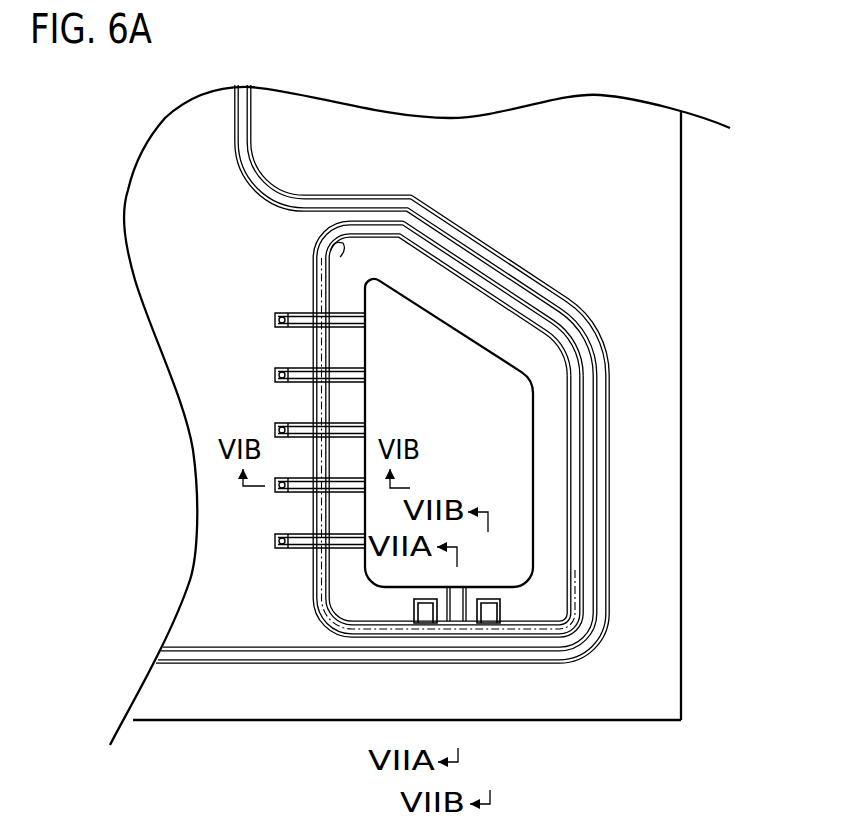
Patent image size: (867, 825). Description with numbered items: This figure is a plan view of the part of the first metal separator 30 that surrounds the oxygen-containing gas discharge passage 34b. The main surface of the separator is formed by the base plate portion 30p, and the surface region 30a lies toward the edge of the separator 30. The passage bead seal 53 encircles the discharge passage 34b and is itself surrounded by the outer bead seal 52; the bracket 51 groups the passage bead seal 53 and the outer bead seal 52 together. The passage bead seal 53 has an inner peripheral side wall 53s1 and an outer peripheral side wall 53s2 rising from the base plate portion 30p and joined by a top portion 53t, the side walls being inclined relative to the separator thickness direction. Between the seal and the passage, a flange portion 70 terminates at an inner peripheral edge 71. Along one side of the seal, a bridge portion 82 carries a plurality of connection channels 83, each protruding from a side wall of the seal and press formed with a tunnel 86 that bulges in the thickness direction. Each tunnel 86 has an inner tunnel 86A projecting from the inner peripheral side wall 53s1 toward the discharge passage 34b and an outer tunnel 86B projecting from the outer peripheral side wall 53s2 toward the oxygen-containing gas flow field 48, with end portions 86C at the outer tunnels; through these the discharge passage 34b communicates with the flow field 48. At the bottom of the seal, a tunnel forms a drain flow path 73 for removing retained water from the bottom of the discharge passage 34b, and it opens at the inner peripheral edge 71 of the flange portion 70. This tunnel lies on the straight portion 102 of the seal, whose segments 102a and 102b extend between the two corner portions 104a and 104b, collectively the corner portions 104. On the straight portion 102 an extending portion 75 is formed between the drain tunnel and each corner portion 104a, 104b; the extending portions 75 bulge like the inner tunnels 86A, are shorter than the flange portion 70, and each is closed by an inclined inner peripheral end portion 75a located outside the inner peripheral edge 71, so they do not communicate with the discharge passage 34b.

The first metal separator 30 is at (686, 228).
The panel surface 30a is at (663, 281).
The base plate portion 30p is at (218, 544).
The oxygen-containing gas discharge passage 34b is at (486, 417).
The oxygen-containing gas flow field 48 is at (180, 272).
The seal assembly 51 is at (422, 292).
The outer bead seal 52 is at (528, 278).
The passage bead seal 53 is at (600, 178).
The inner peripheral side wall 53s1 is at (332, 254).
The outer peripheral side wall 53s2 is at (313, 273).
The top portion 53t is at (325, 298).
The flange portion 70 is at (548, 416).
The inner peripheral edge 71 is at (533, 456).
The drain flow path 73 is at (455, 615).
The extending portion 75 is at (414, 609).
The inner peripheral end portion 75a is at (430, 586).
The bridge portion 82 is at (284, 558).
The connection channel 83 is at (305, 543).
The tunnel 86 is at (315, 355).
The inner tunnel 86A is at (347, 328).
The outer tunnel 86B is at (283, 330).
The clip head portion 86C is at (277, 321).
The straight portion 102 is at (385, 605).
The lower rail first portion 102a is at (389, 655).
The lower rail second portion 102b is at (517, 650).
The inner rail 104 is at (429, 450).
The corner portion 104a is at (319, 619).
The corner portion 104b is at (574, 626).